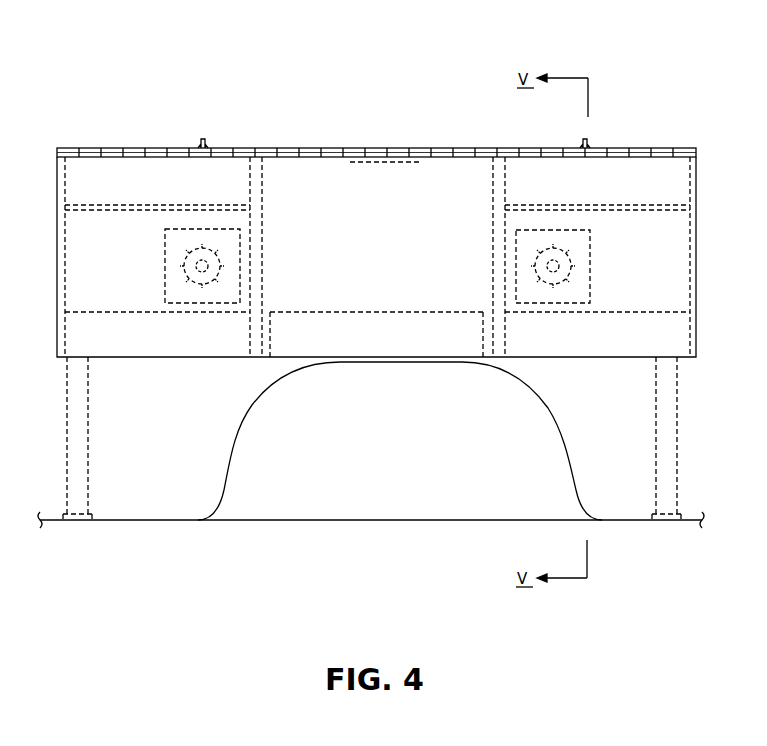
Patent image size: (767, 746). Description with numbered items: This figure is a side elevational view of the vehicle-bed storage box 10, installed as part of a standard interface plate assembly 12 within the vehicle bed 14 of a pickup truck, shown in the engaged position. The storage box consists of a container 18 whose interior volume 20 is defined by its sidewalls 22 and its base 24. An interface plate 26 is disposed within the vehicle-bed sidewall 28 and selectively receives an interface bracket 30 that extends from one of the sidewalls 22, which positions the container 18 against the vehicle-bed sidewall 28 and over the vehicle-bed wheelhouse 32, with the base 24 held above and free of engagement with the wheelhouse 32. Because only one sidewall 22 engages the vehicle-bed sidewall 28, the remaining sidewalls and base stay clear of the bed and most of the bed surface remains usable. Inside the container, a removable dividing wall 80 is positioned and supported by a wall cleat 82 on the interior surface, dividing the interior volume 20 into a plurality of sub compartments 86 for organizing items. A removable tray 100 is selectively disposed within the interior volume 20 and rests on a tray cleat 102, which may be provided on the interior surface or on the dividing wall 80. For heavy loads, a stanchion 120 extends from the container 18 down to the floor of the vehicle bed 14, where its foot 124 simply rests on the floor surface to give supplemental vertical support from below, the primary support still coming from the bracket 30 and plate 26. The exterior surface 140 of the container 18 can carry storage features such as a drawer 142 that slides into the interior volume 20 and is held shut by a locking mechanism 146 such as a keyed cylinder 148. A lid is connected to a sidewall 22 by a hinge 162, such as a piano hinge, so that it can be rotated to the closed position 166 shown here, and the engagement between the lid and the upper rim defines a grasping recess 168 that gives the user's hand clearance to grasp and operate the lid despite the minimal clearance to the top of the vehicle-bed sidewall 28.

The vehicle-bed storage box 10 is at (490, 113).
The standard interface plate assembly 12 is at (150, 256).
The vehicle bed 14 is at (470, 520).
The container 18 is at (697, 298).
The interior volume 20 is at (675, 242).
The sidewalls 22 is at (57, 250).
The base 24 is at (128, 358).
The interface plate 26 is at (163, 232).
The vehicle-bed sidewall 28 is at (606, 496).
The interface bracket 30 is at (207, 297).
The vehicle-bed wheelhouse 32 is at (362, 480).
The removable dividing wall 80 is at (264, 182).
The wall cleat 82 is at (283, 360).
The sub compartments 86 is at (441, 189).
The removable tray 100 is at (633, 190).
The tray cleat 102 is at (493, 225).
The stanchion 120 is at (78, 432).
The foot 124 is at (652, 514).
The exterior surface 140 is at (346, 228).
The drawer 142 is at (318, 363).
The locking mechanism 146 is at (590, 147).
The keyed cylinder 148 is at (376, 312).
The hinge 162 is at (232, 148).
The closed position 166 is at (331, 147).
The grasping recess 168 is at (356, 162).